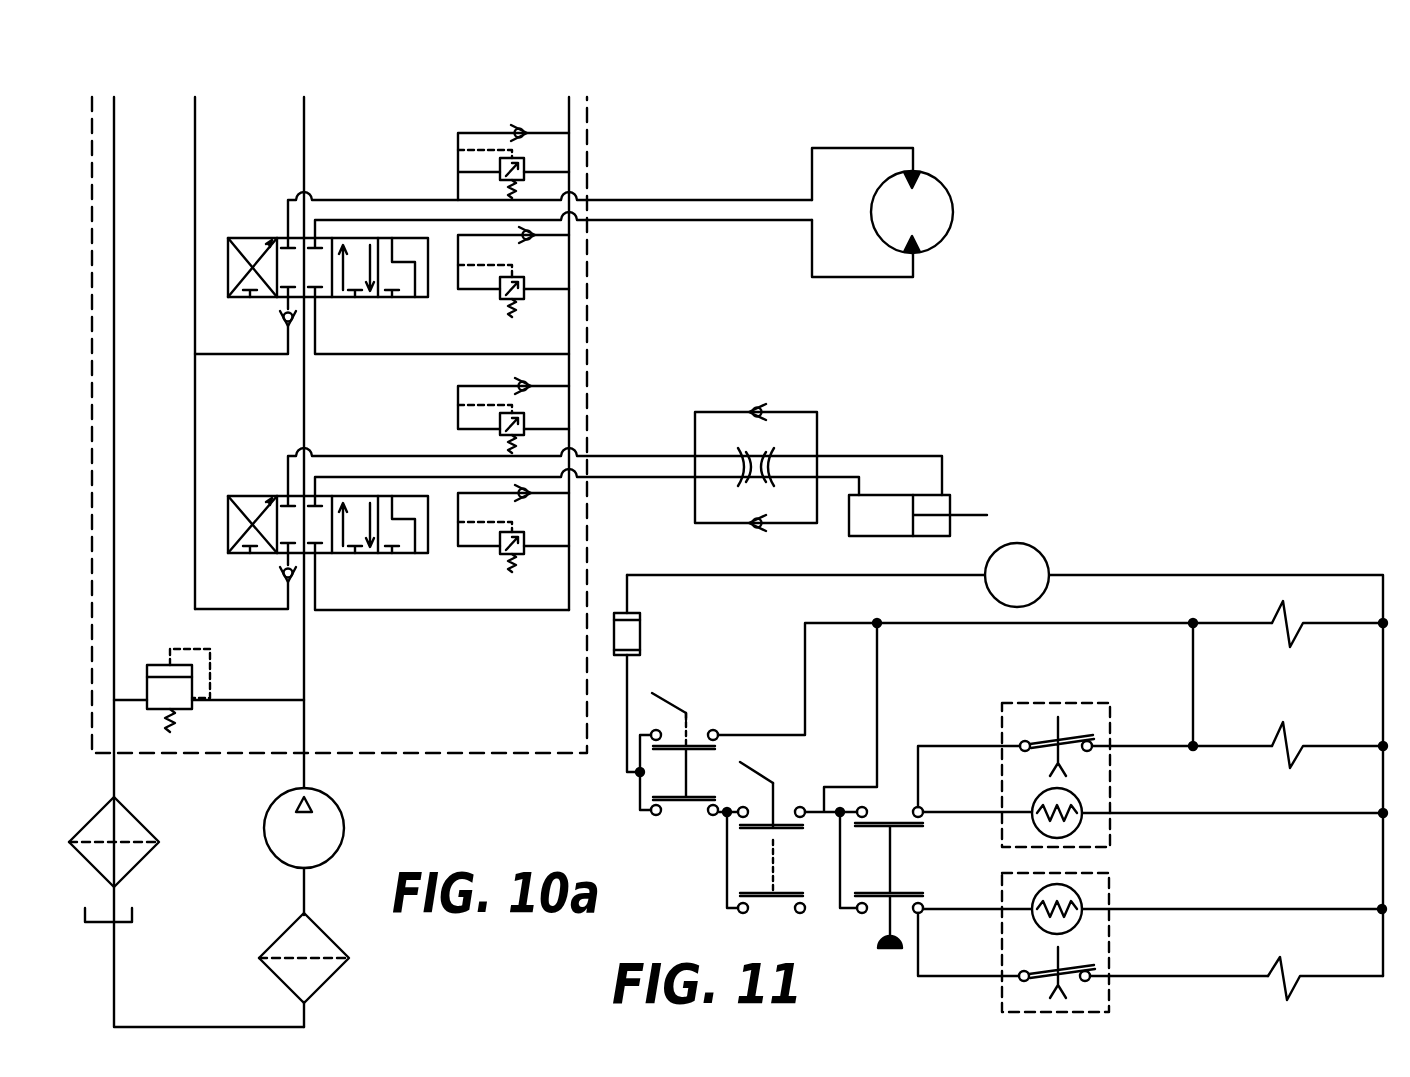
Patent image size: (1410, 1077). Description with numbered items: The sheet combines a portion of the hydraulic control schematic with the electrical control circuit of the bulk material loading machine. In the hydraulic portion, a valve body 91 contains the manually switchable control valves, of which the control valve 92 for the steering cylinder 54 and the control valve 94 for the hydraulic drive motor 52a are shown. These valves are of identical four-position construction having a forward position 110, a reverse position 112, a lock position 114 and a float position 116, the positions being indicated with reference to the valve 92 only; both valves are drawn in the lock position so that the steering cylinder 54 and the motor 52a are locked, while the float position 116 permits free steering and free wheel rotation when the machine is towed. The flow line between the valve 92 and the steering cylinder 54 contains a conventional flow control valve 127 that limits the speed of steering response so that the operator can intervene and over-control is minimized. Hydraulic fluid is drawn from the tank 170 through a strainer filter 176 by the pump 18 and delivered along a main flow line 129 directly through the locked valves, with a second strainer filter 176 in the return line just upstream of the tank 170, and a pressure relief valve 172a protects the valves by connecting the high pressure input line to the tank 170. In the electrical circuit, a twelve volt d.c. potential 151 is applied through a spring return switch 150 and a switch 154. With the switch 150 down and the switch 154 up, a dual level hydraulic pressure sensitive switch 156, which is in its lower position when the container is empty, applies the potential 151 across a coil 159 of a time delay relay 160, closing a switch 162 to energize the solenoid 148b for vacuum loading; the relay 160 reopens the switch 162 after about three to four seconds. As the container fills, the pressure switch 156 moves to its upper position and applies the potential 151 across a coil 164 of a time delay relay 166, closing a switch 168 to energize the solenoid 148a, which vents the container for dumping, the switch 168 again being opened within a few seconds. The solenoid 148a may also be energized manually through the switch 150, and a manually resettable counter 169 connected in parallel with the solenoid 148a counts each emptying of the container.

In FIG. 10A, the valve body 91 is at (596, 301).
In FIG. 10A, the control valve 94 is at (222, 262).
In FIG. 10A, the control valve 92 is at (220, 520).
In FIG. 10A, the hydraulic drive motor 52a is at (953, 228).
In FIG. 10A, the reverse position 112 is at (257, 494).
In FIG. 10A, the forward position 110 is at (365, 496).
In FIG. 10A, the lock position 114 is at (290, 526).
In FIG. 10A, the float position 116 is at (400, 558).
In FIG. 10A, the flow control valve 127 is at (695, 437).
In FIG. 10A, the steering cylinder 54 is at (872, 524).
In FIG. 10A, the pressure relief valve 172a is at (195, 688).
In FIG. 10A, the main flow line 129 is at (306, 733).
In FIG. 10A, the pump 18 is at (326, 832).
In FIG. 10A, the strainer filter 176 is at (140, 866).
In FIG. 10A, the tank 170 is at (127, 906).
In FIG. 11, the 12 volt d.c. potential 151 is at (1033, 560).
In FIG. 11, the switch 150 is at (672, 705).
In FIG. 11, the switch 154 is at (758, 778).
In FIG. 11, the dual level hydraulic pressure sensitive switch 156 is at (886, 905).
In FIG. 11, the switch 168 is at (1036, 740).
In FIG. 11, the time delay relay 166 is at (1110, 752).
In FIG. 11, the coil 164 is at (1036, 826).
In FIG. 11, the manually resettable counter 169 is at (1277, 634).
In FIG. 11, the solenoid 148a is at (1283, 736).
In FIG. 11, the coil 159 is at (1079, 900).
In FIG. 11, the time delay relay 160 is at (1110, 963).
In FIG. 11, the switch 162 is at (1030, 983).
In FIG. 11, the solenoid 148b is at (1285, 972).